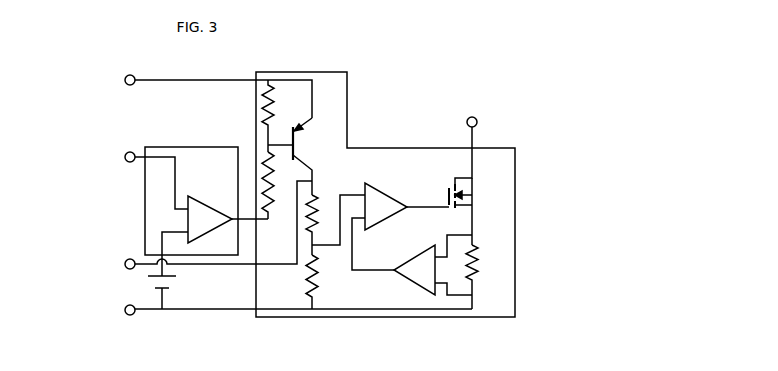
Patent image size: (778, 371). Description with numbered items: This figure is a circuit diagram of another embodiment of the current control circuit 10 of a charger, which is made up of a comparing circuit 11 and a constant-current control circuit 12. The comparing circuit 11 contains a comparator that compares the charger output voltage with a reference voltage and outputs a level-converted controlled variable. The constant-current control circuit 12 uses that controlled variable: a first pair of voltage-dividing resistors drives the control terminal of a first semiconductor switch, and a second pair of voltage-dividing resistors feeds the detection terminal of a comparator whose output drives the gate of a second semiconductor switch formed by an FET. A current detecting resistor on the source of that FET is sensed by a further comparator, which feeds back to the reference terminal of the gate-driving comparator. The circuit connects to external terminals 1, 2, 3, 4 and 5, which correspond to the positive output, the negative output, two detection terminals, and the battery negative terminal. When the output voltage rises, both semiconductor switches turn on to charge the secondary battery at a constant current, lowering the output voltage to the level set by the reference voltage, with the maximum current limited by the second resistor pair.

The output positive terminal (Vo+) 1 is at (193, 89).
The output negative terminal (Vo-) 2 is at (273, 311).
The sense terminal (SENS1) 3 is at (122, 174).
The battery negative terminal (BATT-) 4 is at (471, 131).
The sense terminal (SENS3) 5 is at (184, 228).
The current control circuit 10 is at (364, 135).
The comparing circuit 11 is at (152, 224).
The constant-current control circuit 12 is at (491, 174).